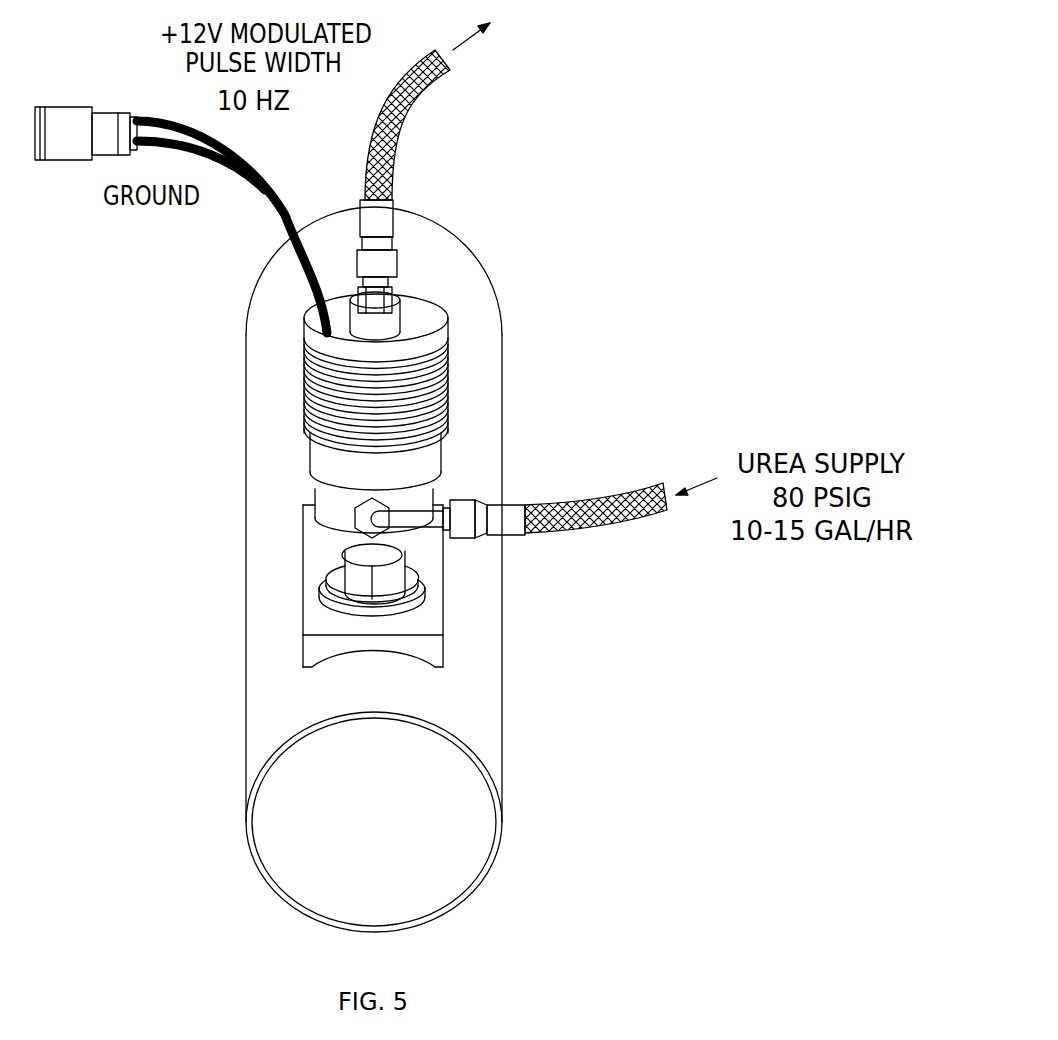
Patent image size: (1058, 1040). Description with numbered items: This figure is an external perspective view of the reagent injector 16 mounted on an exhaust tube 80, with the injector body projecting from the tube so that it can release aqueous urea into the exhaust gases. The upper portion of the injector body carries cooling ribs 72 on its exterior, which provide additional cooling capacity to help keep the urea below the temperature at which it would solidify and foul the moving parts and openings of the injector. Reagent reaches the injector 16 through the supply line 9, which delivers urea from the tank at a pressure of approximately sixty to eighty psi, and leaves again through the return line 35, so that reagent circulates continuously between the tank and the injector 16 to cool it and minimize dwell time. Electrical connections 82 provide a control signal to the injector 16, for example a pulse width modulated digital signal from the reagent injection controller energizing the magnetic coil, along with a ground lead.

The supply line 9 is at (580, 503).
The injector 16 is at (420, 317).
The return line 35 is at (395, 153).
The cooling ribs 72 is at (448, 383).
The exhaust tube 80 is at (473, 631).
The electrical connections 82 is at (273, 207).